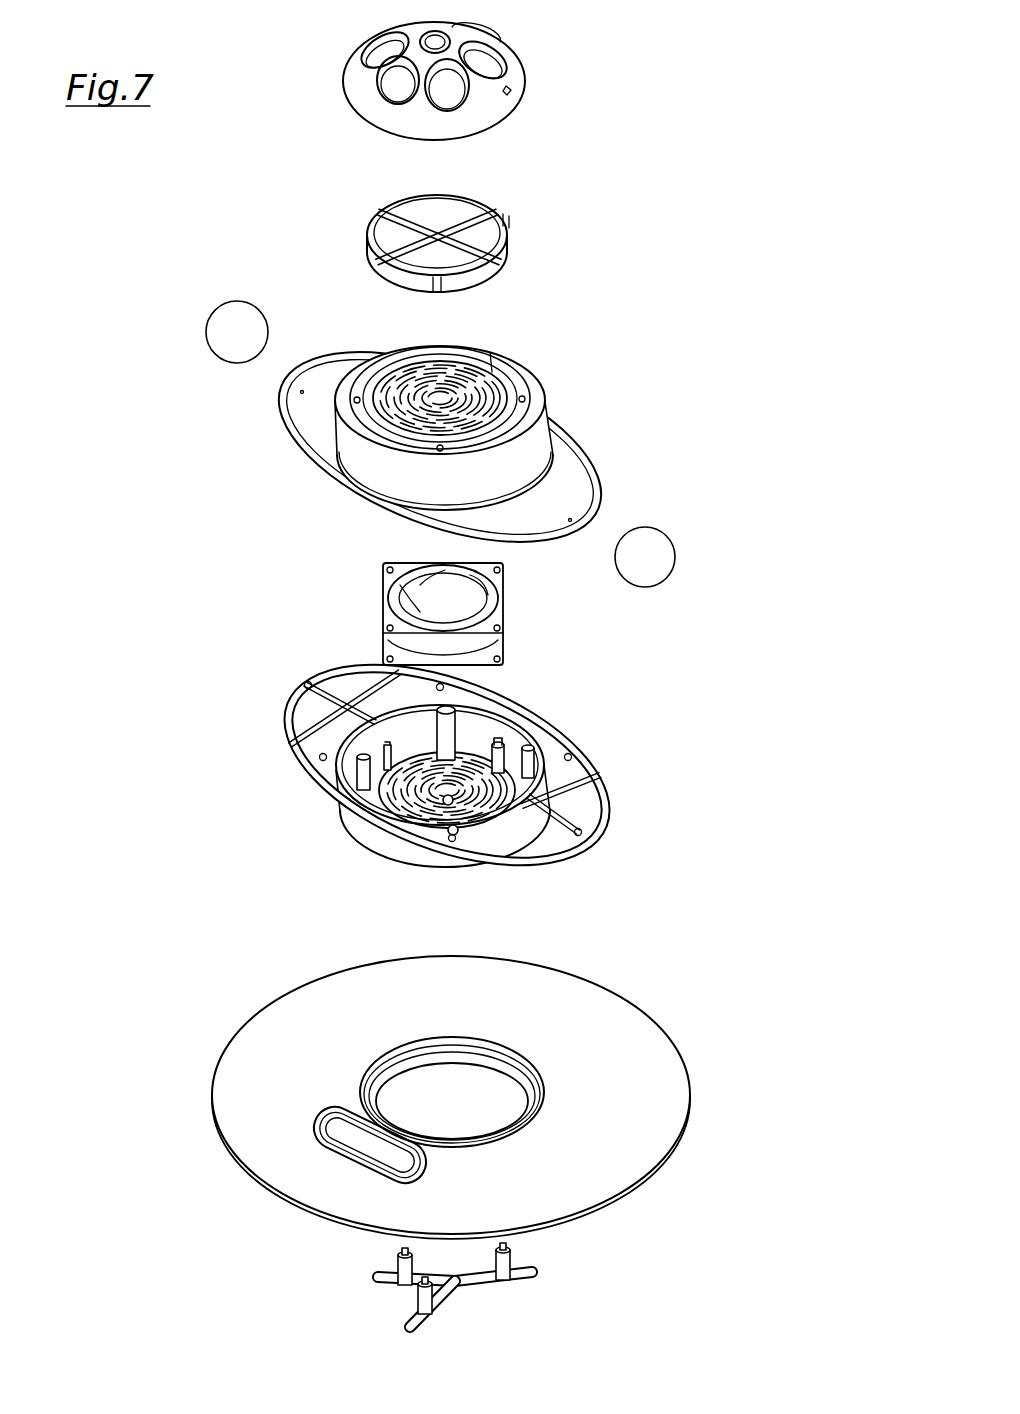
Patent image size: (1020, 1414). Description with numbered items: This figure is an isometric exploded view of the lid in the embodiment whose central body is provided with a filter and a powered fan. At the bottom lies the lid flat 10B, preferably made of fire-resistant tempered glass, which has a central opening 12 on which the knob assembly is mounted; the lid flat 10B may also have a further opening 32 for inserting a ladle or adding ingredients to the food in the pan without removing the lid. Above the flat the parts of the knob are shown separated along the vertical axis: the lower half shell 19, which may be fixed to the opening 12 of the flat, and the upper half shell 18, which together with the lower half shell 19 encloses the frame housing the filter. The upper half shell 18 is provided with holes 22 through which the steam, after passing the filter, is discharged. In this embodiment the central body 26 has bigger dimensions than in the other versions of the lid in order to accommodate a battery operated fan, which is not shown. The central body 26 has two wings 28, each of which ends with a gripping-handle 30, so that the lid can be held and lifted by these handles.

The lid flat 10B is at (595, 1000).
The central opening 12 is at (512, 1096).
The upper half shell 18 is at (495, 108).
The lower half shell 19 is at (387, 830).
The holes 22 is at (485, 62).
The central body 26 is at (530, 432).
The wings 28 is at (575, 478).
The gripping-handle 30 is at (222, 326).
The opening 32 is at (352, 1131).